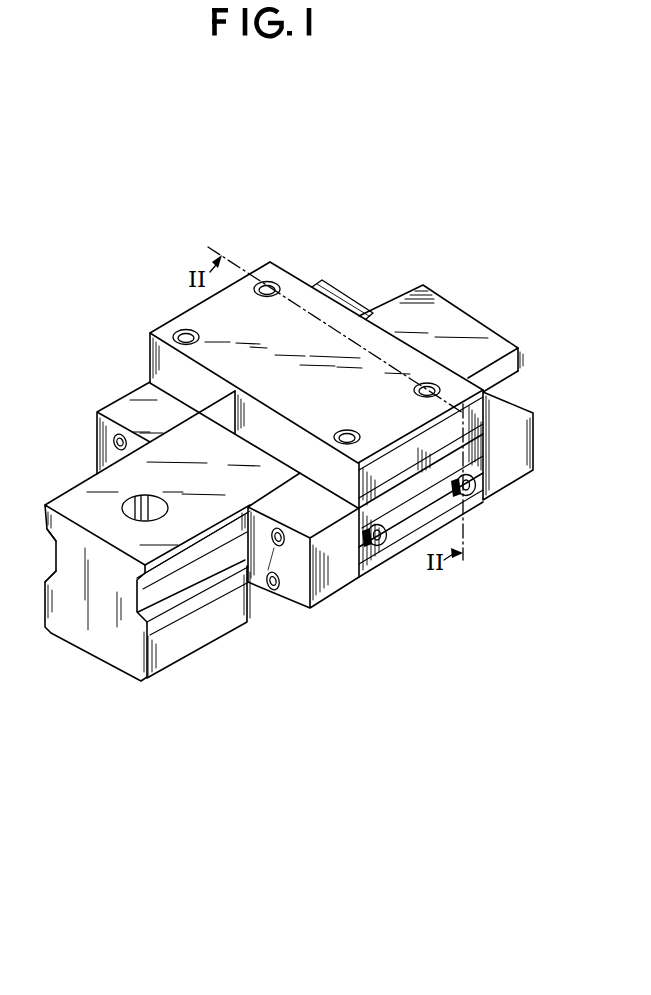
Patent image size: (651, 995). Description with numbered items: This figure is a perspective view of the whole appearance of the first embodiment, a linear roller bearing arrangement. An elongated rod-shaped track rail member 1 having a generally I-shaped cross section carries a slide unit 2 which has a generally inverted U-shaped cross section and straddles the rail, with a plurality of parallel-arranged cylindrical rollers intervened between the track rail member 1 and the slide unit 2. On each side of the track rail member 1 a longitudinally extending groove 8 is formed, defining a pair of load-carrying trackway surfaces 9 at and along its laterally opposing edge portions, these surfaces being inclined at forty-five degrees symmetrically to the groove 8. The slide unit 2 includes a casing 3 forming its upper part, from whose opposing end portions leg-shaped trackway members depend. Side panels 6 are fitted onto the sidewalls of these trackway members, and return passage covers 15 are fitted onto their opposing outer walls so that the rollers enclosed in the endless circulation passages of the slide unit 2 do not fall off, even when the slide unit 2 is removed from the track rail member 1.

The track rail member 1 is at (73, 503).
The slide unit 2 is at (338, 626).
The casing 3 is at (198, 311).
The side panel 6 is at (118, 407).
The groove 8 is at (142, 597).
The load-carrying trackway surfaces 9 is at (133, 585).
The return passage covers 15 is at (392, 552).